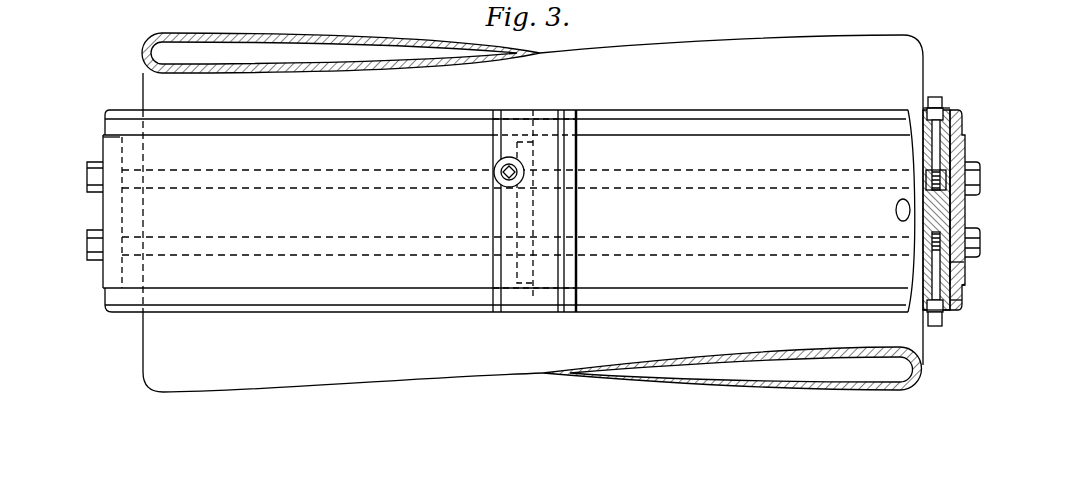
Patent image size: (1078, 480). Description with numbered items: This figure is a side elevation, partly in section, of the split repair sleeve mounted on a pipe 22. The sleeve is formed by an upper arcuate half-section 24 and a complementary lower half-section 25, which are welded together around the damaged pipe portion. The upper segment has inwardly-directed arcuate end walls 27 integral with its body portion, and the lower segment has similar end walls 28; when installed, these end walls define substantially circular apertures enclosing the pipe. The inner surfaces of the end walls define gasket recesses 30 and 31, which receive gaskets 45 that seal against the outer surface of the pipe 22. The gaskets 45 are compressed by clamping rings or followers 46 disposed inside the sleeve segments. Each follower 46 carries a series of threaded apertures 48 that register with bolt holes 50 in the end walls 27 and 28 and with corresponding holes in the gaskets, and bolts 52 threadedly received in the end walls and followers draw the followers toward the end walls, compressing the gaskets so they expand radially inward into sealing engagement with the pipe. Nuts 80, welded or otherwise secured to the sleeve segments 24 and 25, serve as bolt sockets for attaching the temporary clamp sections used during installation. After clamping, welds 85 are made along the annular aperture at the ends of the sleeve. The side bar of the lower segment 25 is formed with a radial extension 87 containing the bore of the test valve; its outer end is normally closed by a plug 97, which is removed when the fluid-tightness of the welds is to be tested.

The pipe 22 is at (798, 368).
The upper arcuate half-section 24 is at (964, 272).
The lower half-section 25 is at (108, 270).
The end walls 27 is at (946, 313).
The end walls 28 is at (129, 306).
The gasket recess 30 is at (963, 124).
The gasket recess 31 is at (120, 136).
The gaskets 45 is at (962, 292).
The followers 46 is at (966, 215).
The threaded apertures 48 is at (932, 195).
The bolt holes 50 is at (952, 300).
The bolts 52 is at (944, 102).
The nuts 80 is at (95, 240).
The welds 85 is at (925, 108).
The radial extension 87 is at (507, 162).
The plug 97 is at (510, 170).